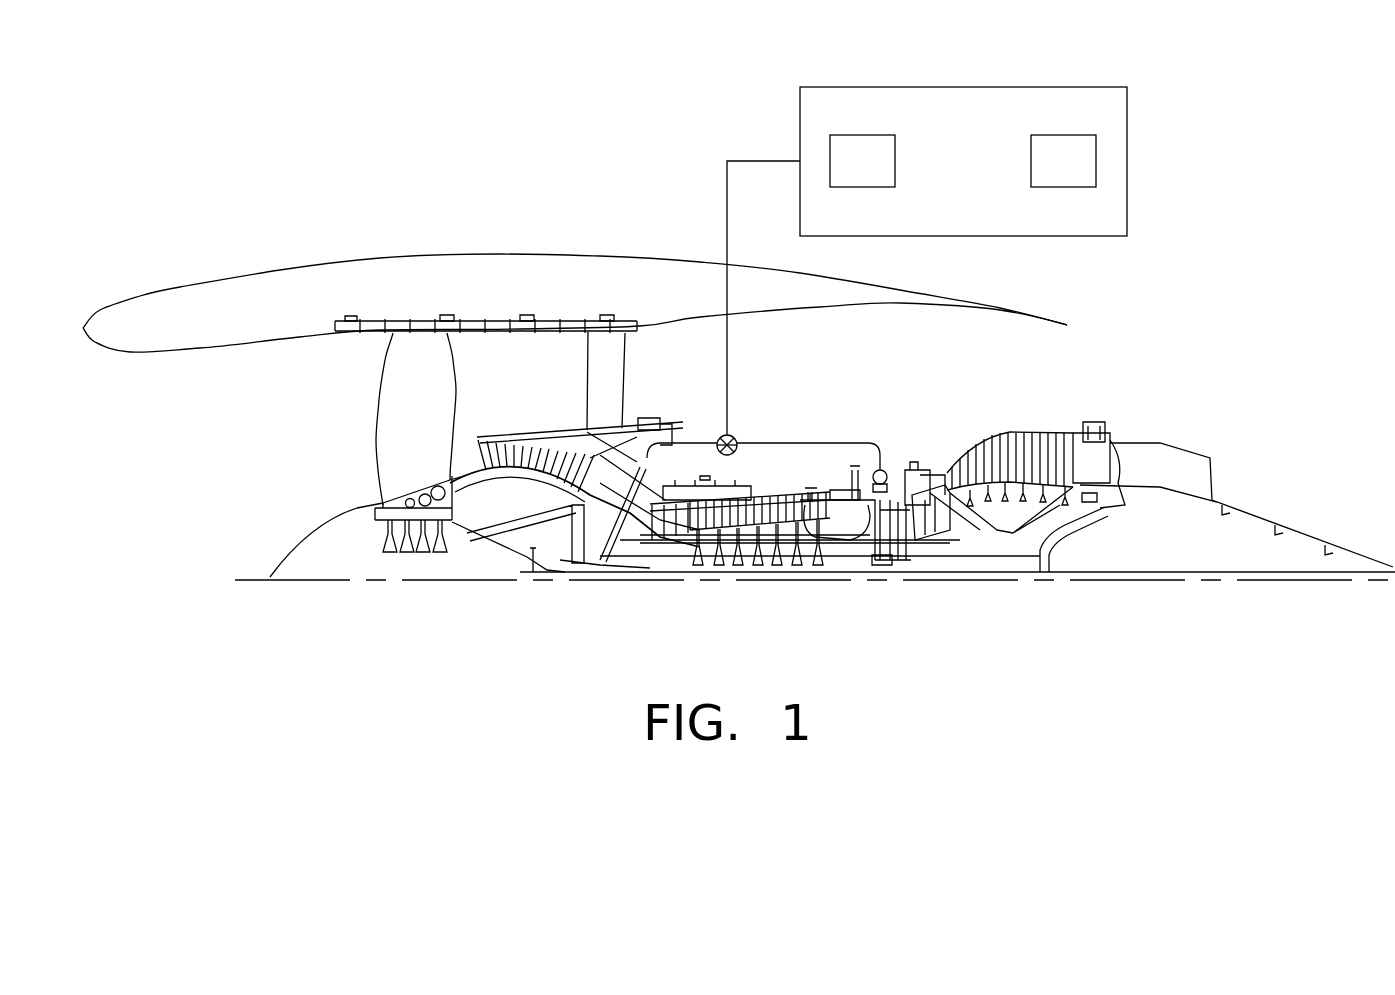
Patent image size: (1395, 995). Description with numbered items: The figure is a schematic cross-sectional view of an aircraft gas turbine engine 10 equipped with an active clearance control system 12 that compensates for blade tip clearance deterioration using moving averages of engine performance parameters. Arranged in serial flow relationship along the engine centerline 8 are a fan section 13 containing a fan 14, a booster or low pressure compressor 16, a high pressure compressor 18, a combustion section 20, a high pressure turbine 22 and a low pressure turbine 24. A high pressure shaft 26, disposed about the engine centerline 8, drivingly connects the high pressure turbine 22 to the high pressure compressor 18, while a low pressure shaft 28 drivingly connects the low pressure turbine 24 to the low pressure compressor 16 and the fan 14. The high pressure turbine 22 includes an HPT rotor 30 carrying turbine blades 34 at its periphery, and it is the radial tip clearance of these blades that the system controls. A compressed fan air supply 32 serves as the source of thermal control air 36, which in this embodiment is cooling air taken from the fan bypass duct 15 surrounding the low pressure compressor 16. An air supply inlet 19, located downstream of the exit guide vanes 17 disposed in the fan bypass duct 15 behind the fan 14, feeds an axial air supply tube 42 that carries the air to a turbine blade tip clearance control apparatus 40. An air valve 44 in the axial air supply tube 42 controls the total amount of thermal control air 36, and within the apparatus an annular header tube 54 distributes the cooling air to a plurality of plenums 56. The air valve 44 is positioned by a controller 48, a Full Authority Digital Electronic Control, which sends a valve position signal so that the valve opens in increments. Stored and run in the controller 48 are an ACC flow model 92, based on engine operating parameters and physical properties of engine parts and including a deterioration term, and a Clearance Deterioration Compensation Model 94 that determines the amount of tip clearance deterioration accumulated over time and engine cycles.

The engine centerline 8 is at (412, 581).
The aircraft gas turbine engine 10 is at (250, 660).
The active clearance control system 12 is at (822, 388).
The fan section 13 is at (487, 268).
The fan 14 is at (404, 411).
The fan bypass duct 15 is at (512, 350).
The booster or low pressure compressor 16 is at (520, 437).
The exit guide vanes 17 is at (627, 348).
The high pressure compressor 18 is at (747, 493).
The air supply inlet 19 is at (640, 425).
The combustion section 20 is at (820, 522).
The high pressure turbine 22 is at (900, 540).
The low pressure turbine 24 is at (1043, 427).
The high pressure shaft 26 is at (847, 537).
The low pressure shaft 28 is at (970, 560).
The HPT rotor 30 is at (880, 560).
The compressed fan air supply 32 is at (700, 435).
The turbine blades 34 is at (953, 487).
The thermal control air 36 is at (685, 450).
The turbine blade tip clearance control apparatus 40 is at (915, 465).
The axial air supply tube 42 is at (813, 440).
The air valve 44 is at (735, 437).
The controller 48 is at (950, 174).
The annular header tube 54 is at (883, 470).
The plenums 56 is at (857, 510).
The ACC flow model 92 is at (862, 161).
The Clearance Deterioration Compensation Model 94 is at (1063, 161).